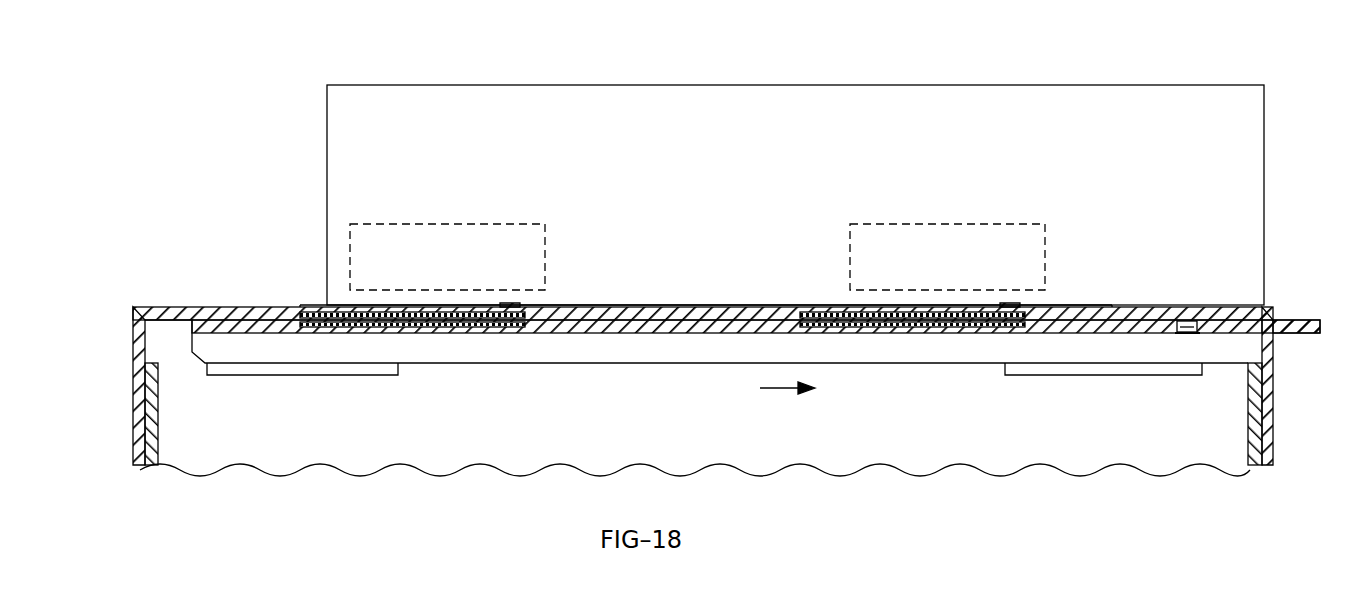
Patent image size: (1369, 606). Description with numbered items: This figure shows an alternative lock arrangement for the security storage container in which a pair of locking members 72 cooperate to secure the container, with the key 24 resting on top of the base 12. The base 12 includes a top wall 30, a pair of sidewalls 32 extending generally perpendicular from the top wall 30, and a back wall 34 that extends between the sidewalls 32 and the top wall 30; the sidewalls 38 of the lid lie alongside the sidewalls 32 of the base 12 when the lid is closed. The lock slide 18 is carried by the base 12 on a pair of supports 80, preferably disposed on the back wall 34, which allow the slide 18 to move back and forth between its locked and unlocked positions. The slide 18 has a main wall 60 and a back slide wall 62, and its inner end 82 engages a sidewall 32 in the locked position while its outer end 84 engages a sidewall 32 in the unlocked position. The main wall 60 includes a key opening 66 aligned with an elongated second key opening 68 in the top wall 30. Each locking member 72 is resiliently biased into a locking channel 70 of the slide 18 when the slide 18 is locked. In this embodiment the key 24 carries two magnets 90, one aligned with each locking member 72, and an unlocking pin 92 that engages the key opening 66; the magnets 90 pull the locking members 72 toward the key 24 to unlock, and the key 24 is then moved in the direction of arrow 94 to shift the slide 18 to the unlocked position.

The base 12 is at (145, 307).
The lock slide 18 is at (675, 358).
The key 24 is at (327, 145).
The top wall 30 is at (213, 307).
The sidewalls 32 is at (140, 415).
The back wall 34 is at (508, 450).
The sidewalls 38 is at (155, 416).
The main wall 60 is at (277, 333).
The back slide wall 62 is at (567, 352).
The key opening 66 is at (1187, 340).
The second key opening 68 is at (1143, 318).
The locking channel 70 is at (475, 327).
The locking member 72 is at (365, 318).
The supports 80 is at (330, 366).
The inner end 82 is at (192, 345).
The outer end 84 is at (1255, 348).
The magnet 90 is at (362, 263).
The unlocking pin 92 is at (1190, 318).
The arrow 94 is at (958, 52).